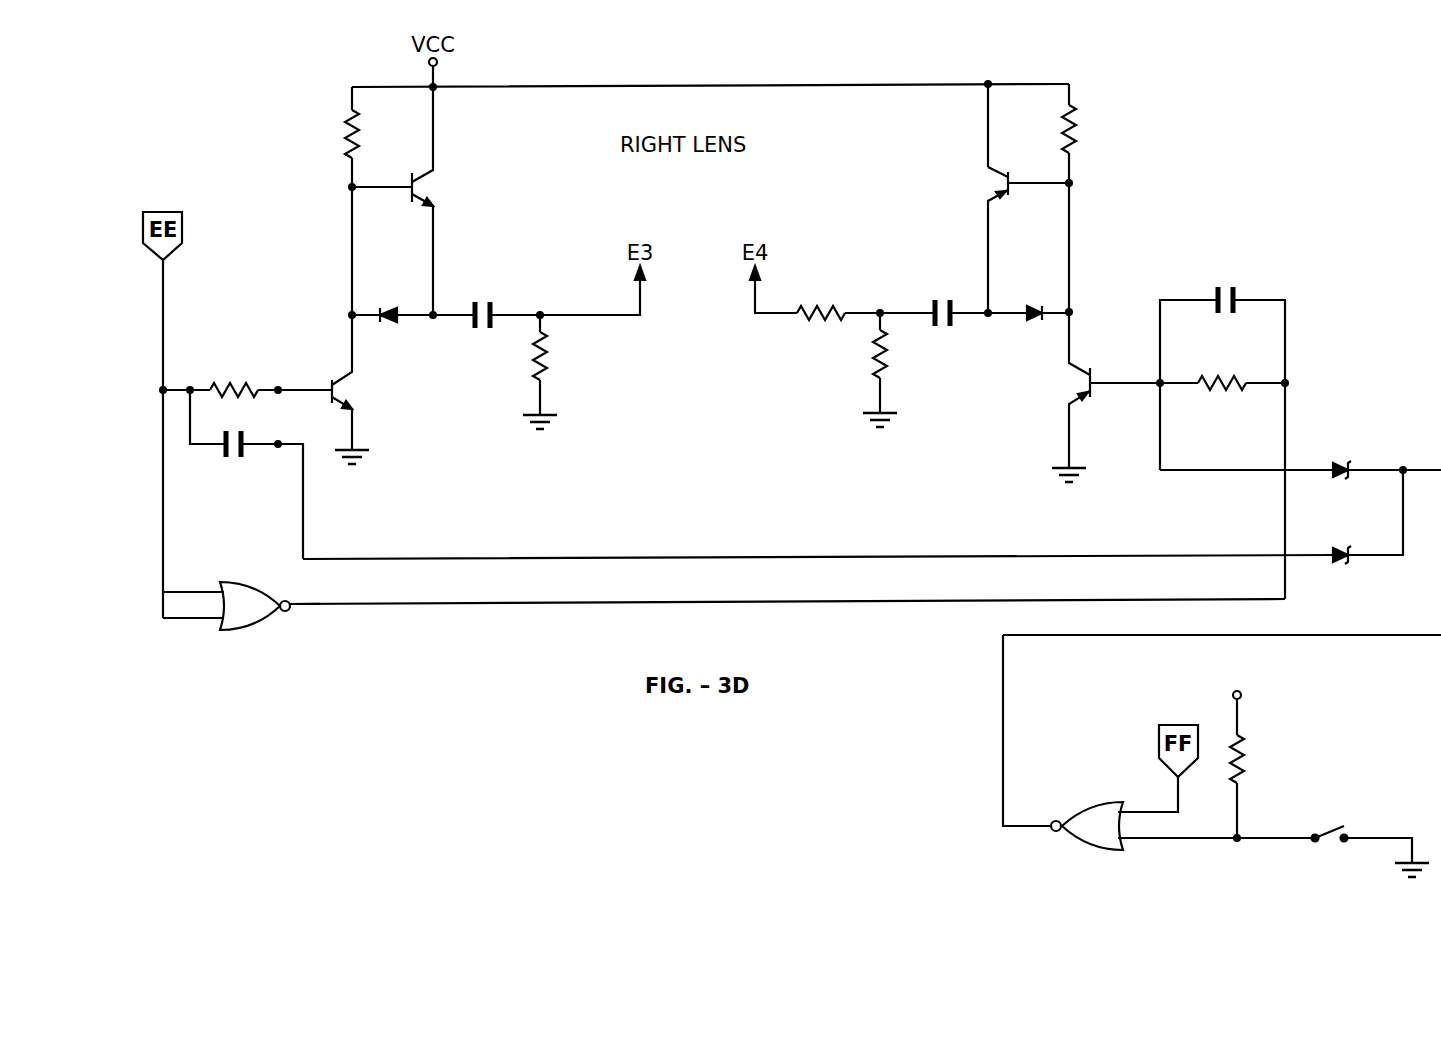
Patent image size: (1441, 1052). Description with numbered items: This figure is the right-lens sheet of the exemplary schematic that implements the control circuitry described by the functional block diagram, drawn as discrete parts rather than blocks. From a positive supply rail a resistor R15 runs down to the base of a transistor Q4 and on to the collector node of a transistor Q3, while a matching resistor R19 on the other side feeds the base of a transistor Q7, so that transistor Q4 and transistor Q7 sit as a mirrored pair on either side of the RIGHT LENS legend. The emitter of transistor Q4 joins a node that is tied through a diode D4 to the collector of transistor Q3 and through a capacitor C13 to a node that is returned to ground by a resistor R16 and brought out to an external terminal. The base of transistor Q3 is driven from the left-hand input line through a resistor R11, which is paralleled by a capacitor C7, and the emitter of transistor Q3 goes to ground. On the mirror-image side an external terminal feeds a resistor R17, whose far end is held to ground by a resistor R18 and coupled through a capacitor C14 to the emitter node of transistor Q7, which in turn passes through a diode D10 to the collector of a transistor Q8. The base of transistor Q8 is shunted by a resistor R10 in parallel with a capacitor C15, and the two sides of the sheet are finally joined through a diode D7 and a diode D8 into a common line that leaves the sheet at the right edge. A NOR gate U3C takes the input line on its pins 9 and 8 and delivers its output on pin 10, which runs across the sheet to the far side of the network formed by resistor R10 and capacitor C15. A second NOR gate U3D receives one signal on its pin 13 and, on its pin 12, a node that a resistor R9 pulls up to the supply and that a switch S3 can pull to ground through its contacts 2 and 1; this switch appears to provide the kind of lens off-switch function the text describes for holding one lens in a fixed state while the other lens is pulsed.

The resistor R15 33K R15 is at (326, 201).
The transistor Q4 BCX-70K Q4 is at (443, 201).
The diode D4 DL4148 D4 is at (392, 328).
The capacitor C13 1UF 50V NP C13 is at (486, 337).
The resistor R16 100K R16 is at (567, 370).
The resistor R11 33K R11 is at (247, 365).
The capacitor C7 10PF C7 is at (246, 474).
The transistor Q3 BCX-70K Q3 is at (393, 389).
The NOR gate U3C CD4001BCM U3C is at (724, 606).
The U3C input pin 9 is at (193, 581).
The U3C input pin 8 is at (193, 608).
The U3C output pin 10 is at (305, 591).
The resistor R17 1K R17 is at (817, 289).
The resistor R18 100K R18 is at (856, 368).
The capacitor C14 1UF 50V NP C14 is at (936, 337).
The diode D10 DL4148 D10 is at (1030, 325).
The transistor Q7 BCX-70K Q7 is at (972, 236).
The resistor R19 33K R19 is at (1094, 198).
The transistor Q8 BCX-70K Q8 is at (1106, 397).
The resistor R10 33K R10 is at (1222, 409).
The capacitor C15 10PF C15 is at (1222, 429).
The diode D7 2C5800E D7 is at (1300, 473).
The diode D8 2C5800E D8 is at (853, 531).
The NOR gate U3D CD4001BCM U3D is at (1222, 757).
The U3D input pin 13 is at (1148, 795).
The frame 12 is at (1216, 829).
The resistor R9 100K R9 is at (1259, 755).
The switch S3 is at (1362, 835).
The switch S3 terminal 2 is at (1302, 826).
The switch S3 terminal 1 is at (1359, 826).